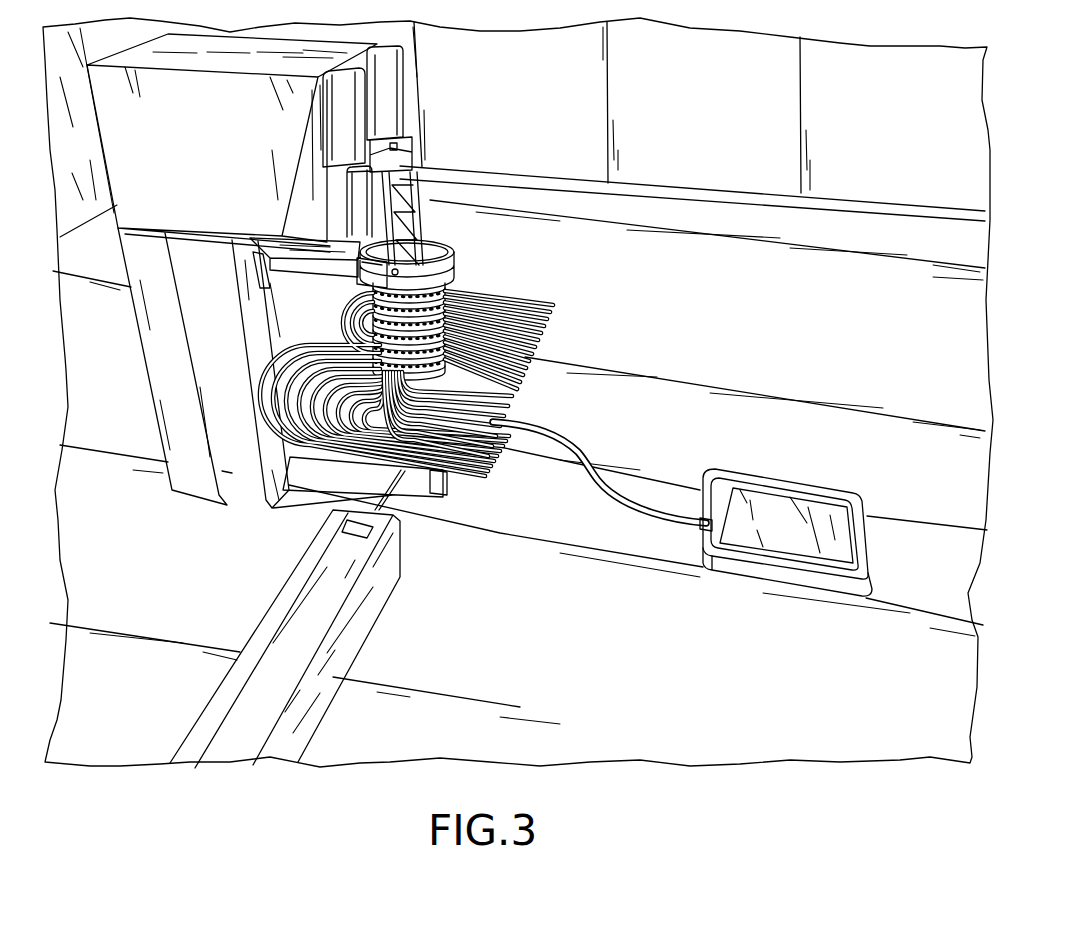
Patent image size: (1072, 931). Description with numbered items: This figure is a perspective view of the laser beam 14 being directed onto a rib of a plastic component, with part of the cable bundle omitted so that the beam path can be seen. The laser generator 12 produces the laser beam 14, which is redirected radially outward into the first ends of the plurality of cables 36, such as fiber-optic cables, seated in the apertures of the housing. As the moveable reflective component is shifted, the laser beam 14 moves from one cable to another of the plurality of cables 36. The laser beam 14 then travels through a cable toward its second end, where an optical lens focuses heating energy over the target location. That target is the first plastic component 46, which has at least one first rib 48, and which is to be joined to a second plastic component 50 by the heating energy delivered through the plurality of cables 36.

The laser generator 12 is at (210, 722).
The laser beam 14 is at (598, 473).
The plurality of cables 36 is at (299, 403).
The plastic component 46 is at (836, 526).
The first rib 48 is at (845, 493).
The second plastic component 50 is at (707, 523).